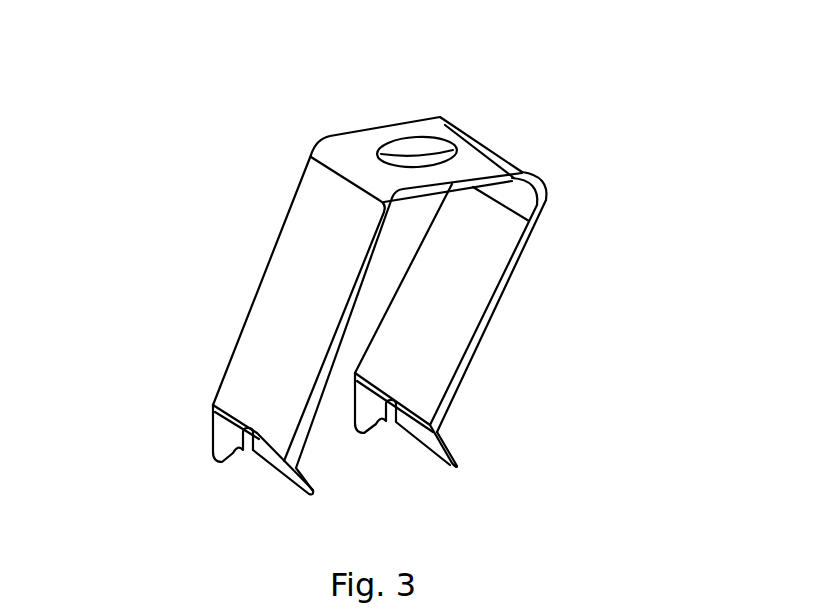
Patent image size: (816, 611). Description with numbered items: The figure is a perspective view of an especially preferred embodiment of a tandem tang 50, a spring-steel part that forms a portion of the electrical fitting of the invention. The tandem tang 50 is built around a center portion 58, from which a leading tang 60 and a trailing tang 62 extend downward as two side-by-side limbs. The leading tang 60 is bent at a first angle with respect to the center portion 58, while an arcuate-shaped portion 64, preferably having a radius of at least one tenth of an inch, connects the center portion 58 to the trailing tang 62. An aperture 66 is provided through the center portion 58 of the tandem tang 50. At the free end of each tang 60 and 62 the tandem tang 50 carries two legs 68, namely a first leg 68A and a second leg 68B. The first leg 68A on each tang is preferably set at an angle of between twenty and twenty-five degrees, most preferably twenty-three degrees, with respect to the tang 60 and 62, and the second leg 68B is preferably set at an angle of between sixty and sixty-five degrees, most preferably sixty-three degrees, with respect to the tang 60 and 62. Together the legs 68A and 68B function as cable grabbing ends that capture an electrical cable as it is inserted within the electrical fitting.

The tandem tang 50 is at (187, 222).
The center portion 58 is at (353, 143).
The aperture 66 is at (418, 152).
The arcuate-shaped portion 64 is at (537, 178).
The leading tang 60 is at (302, 323).
The trailing tang 62 is at (450, 308).
The legs 68 is at (175, 433).
The first leg 68A is at (225, 441).
The second leg 68B is at (282, 468).